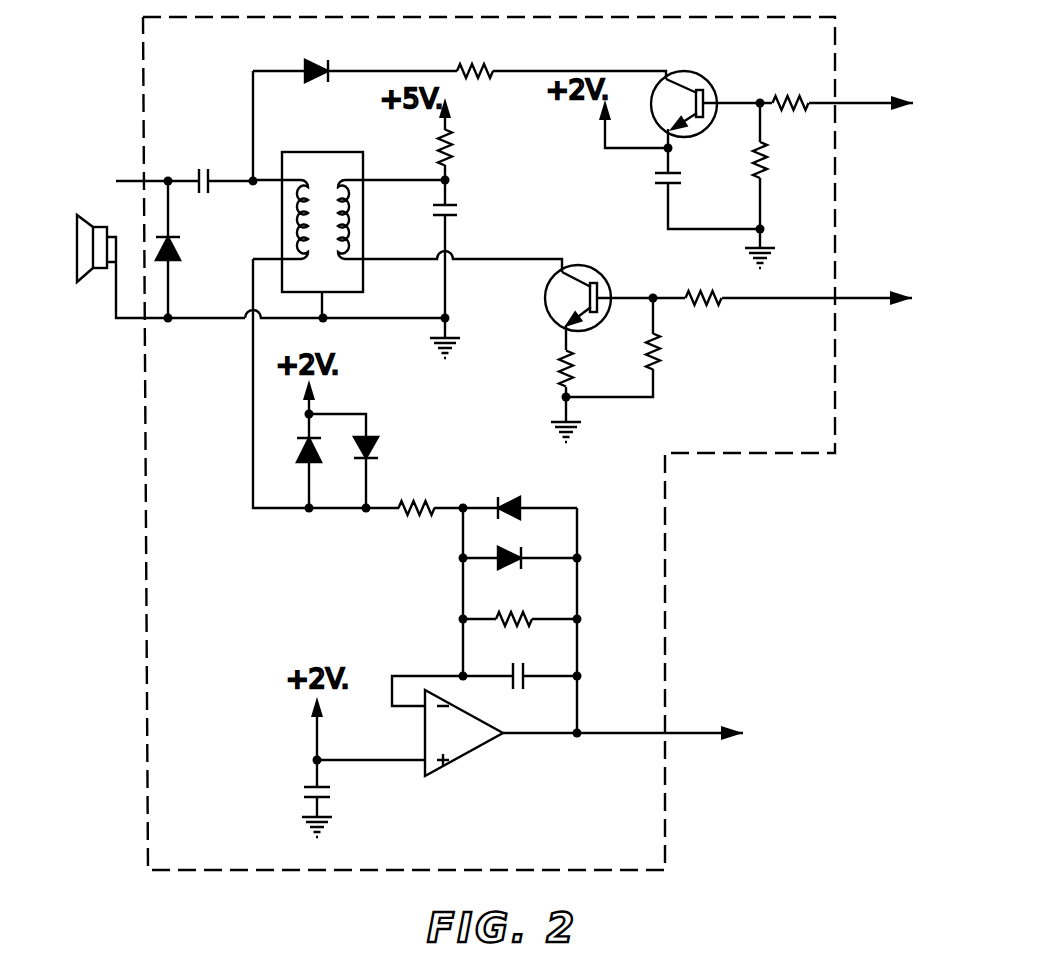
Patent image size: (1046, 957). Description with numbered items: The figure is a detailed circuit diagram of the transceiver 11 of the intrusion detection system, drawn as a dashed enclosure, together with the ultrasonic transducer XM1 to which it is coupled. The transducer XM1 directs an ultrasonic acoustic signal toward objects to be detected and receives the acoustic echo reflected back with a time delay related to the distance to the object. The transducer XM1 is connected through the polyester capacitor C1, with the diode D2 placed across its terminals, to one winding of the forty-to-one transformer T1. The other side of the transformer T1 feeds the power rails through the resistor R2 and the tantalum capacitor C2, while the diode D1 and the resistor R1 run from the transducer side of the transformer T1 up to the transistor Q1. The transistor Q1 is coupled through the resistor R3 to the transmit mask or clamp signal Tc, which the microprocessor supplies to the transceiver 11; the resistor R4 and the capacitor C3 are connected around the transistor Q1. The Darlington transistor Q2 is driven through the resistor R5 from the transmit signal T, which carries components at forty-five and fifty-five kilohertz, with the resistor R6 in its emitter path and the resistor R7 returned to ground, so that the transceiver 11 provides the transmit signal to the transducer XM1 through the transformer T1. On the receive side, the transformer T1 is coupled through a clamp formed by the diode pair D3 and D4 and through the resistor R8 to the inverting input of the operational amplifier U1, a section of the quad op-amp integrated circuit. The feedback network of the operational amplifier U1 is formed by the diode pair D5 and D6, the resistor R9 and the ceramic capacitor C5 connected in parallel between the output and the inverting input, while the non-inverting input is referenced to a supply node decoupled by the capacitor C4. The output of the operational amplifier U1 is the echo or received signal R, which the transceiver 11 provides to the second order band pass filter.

The transceiver 11 is at (663, 543).
The ultrasonic transducer XM1 is at (141, 249).
The capacitor C1 is at (210, 165).
The diode D2 is at (193, 249).
The diode D1 is at (321, 54).
The resistor R1 is at (528, 52).
The transformer T1 is at (407, 218).
The resistor R2 is at (468, 155).
The capacitor C2 is at (464, 269).
The transistor Q1 is at (705, 91).
The resistor R3 is at (800, 85).
The transmit mask or clamp signal Tc is at (878, 98).
The resistor R4 is at (779, 185).
The capacitor C3 is at (688, 188).
The Darlington transistor Q2 is at (599, 292).
The resistor R5 is at (746, 279).
The transmit signal T is at (878, 293).
The resistor R6 is at (546, 396).
The resistor R7 is at (637, 347).
The diode D3 is at (290, 461).
The diode D4 is at (381, 458).
The resistor R8 is at (421, 491).
The diode D5 is at (520, 491).
The diode D6 is at (520, 547).
The resistor R9 is at (520, 603).
The capacitor C5 is at (520, 667).
The quad op-amp integrated circuit U1 is at (483, 730).
The received signal R is at (708, 728).
The capacitor C4 is at (336, 798).